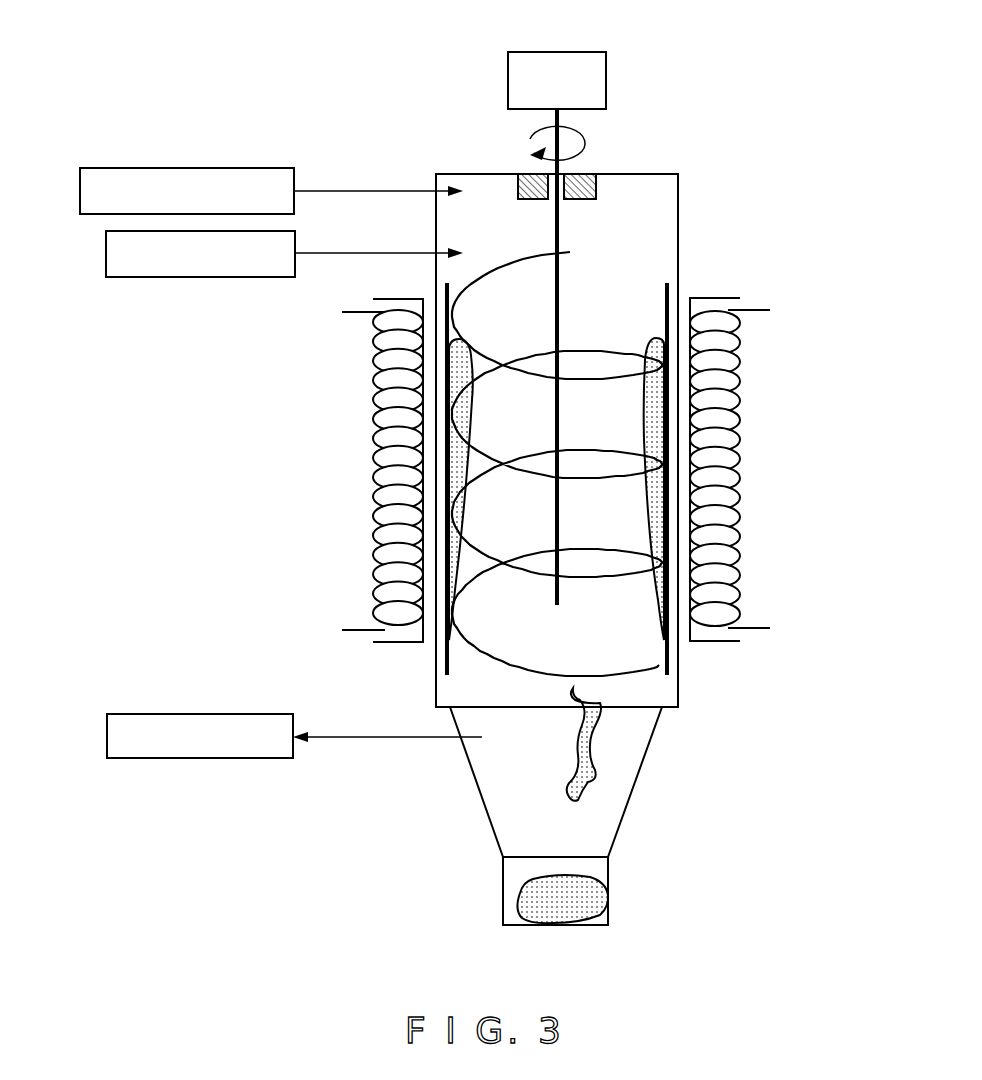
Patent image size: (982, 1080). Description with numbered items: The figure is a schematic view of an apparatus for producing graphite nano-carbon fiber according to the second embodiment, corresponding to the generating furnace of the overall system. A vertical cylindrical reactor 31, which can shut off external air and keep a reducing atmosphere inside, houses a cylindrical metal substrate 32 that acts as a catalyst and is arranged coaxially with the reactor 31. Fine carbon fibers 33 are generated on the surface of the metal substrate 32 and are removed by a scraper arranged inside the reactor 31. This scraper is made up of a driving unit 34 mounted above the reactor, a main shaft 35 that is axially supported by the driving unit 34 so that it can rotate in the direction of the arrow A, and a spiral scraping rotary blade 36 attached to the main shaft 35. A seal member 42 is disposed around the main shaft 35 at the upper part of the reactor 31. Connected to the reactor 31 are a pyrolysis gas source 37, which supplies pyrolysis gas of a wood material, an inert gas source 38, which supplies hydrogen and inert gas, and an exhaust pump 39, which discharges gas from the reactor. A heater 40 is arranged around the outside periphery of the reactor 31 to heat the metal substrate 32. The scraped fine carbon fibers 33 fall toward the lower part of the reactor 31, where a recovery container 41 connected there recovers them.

The vertical cylindrical reactor 31 is at (679, 203).
The cylindrical metal substrate 32 is at (669, 292).
The fine carbon fibers 33 is at (473, 410).
The driving unit 34 is at (581, 52).
The main shaft 35 is at (560, 297).
The spiral scraping rotary blade 36 is at (488, 345).
The pyrolysis gas source 37 is at (198, 168).
The inert gas source 38 is at (199, 280).
The exhaust pump 39 is at (198, 714).
The heater 40 is at (372, 412).
The recovery container 41 is at (610, 870).
The seal member 42 is at (528, 181).
The arrow A is at (586, 145).